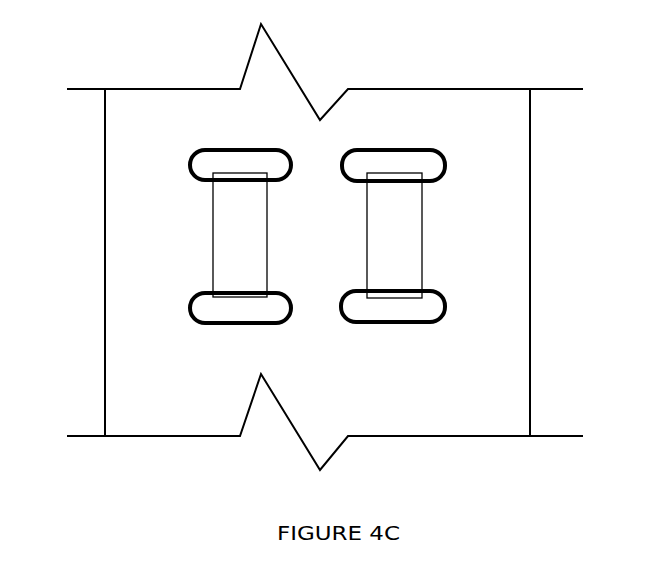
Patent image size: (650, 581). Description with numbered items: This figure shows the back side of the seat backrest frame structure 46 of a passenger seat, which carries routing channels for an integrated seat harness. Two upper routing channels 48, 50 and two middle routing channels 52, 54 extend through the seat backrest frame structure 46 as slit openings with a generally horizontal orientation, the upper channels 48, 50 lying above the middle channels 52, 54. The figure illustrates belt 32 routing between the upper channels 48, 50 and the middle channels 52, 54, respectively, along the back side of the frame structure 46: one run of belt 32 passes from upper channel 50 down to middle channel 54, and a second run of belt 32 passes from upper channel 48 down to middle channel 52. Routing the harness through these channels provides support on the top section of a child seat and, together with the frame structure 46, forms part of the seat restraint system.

The seat backrest frame structure 46 is at (318, 257).
The belt 32 is at (212, 210).
The upper routing channel 48 is at (420, 147).
The upper routing channel 50 is at (202, 145).
The middle routing channel 52 is at (410, 326).
The middle routing channel 54 is at (192, 325).